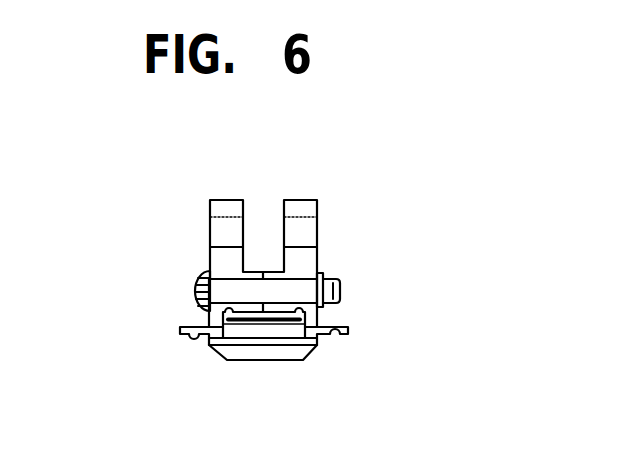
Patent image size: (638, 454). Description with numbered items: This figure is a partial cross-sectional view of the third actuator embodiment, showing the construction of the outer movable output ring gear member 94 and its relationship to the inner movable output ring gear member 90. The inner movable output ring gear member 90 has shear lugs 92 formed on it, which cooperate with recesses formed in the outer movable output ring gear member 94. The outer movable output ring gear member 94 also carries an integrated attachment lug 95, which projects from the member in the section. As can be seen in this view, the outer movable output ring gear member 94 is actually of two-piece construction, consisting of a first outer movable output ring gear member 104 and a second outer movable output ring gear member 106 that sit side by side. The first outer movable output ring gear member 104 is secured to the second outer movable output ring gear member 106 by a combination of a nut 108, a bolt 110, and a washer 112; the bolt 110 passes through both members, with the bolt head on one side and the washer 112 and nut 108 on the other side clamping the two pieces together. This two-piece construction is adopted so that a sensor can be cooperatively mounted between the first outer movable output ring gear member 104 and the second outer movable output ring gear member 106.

The inner movable output ring gear member 90 is at (263, 337).
The shear lug 92 is at (275, 328).
The outer movable output ring gear member 94 is at (367, 216).
The integrated attachment lug 95 is at (300, 212).
The first outer movable output ring gear member 104 is at (220, 266).
The second outer movable output ring gear member 106 is at (300, 264).
The nut 108 is at (333, 300).
The bolt 110 is at (225, 295).
The washer 112 is at (338, 282).